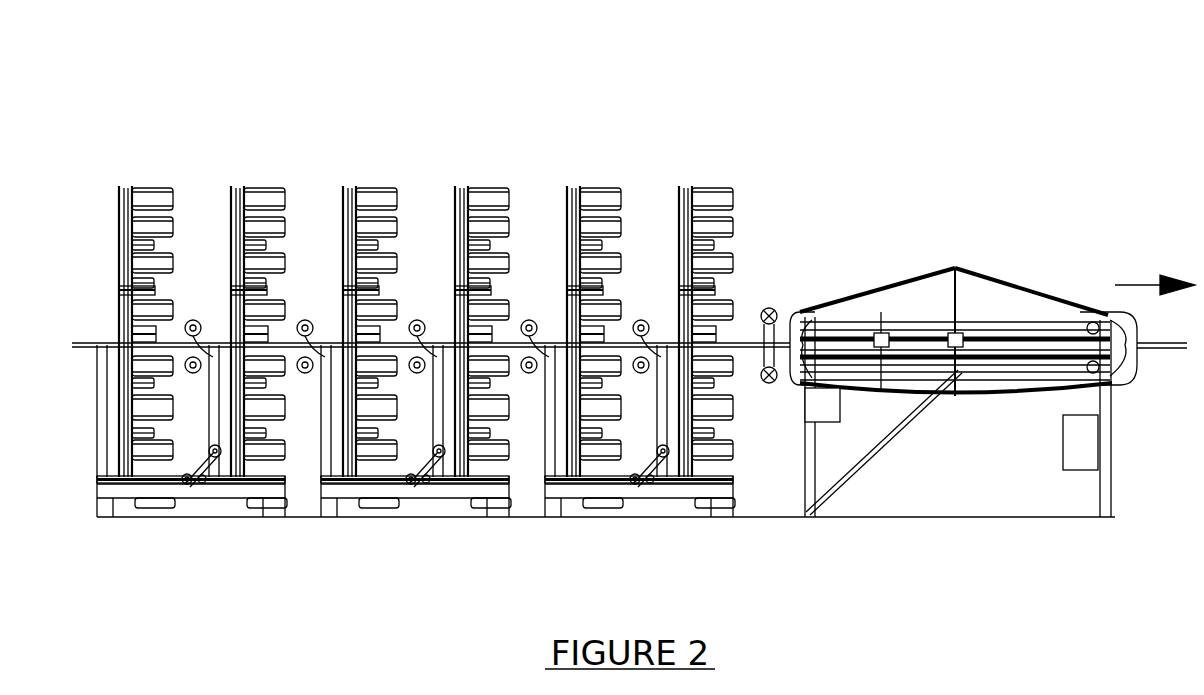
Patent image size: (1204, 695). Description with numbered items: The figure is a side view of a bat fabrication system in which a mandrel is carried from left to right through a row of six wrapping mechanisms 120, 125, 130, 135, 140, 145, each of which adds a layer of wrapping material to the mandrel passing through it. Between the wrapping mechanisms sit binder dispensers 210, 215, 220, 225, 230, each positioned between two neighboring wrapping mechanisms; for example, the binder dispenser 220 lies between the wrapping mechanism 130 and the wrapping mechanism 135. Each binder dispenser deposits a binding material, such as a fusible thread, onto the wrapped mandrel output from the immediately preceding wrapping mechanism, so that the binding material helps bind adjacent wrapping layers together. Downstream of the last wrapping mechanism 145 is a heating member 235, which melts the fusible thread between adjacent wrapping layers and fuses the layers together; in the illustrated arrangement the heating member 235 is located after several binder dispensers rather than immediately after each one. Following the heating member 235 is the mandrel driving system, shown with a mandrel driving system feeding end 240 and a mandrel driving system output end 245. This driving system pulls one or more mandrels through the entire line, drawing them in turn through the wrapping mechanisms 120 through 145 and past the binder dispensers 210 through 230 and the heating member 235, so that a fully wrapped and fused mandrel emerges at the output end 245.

The first wrapping mechanism 120 is at (148, 186).
The wrapping mechanism 125 is at (260, 186).
The wrapping mechanism 130 is at (372, 186).
The wrapping mechanism 135 is at (484, 186).
The wrapping mechanism 140 is at (596, 186).
The wrapping mechanism 145 is at (708, 186).
The binder dispenser 210 is at (193, 319).
The binder dispenser 215 is at (305, 319).
The binder dispenser 220 is at (417, 319).
The binder dispenser 225 is at (529, 319).
The binder dispenser 230 is at (641, 319).
The heating member 235 is at (769, 307).
The mandrel driving system feeding end 240 is at (838, 320).
The mandrel driving system output end 245 is at (1083, 323).